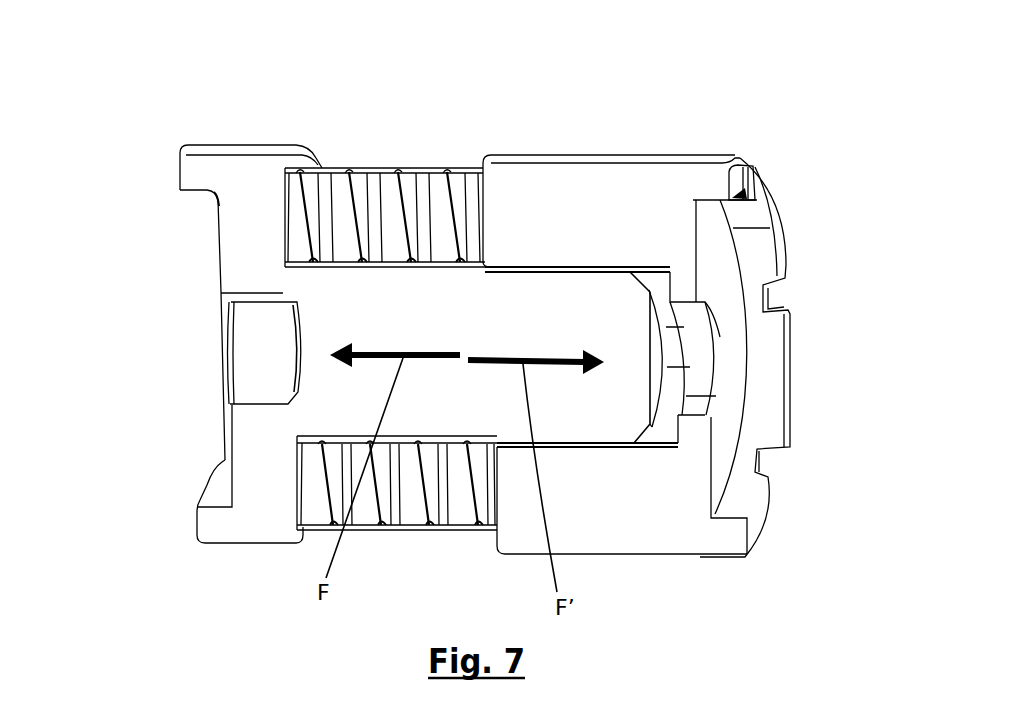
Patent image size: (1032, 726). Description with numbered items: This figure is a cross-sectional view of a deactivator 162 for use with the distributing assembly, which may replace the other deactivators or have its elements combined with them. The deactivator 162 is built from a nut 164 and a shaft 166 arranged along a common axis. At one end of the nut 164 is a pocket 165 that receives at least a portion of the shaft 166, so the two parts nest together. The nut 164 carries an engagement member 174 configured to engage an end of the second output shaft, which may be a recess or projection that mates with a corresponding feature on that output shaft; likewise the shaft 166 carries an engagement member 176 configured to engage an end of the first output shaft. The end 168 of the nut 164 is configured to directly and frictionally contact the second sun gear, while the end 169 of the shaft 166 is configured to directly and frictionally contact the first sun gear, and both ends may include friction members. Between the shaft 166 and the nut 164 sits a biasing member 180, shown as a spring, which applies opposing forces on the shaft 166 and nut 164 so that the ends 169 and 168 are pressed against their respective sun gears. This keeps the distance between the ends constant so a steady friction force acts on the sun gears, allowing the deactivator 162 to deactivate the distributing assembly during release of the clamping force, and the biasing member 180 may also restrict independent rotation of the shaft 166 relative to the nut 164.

The deactivator 162 is at (150, 95).
The nut 164 is at (662, 168).
The pocket 165 is at (668, 421).
The shaft 166 is at (258, 178).
The end of the nut 168 is at (560, 323).
The end of the shaft 169 is at (195, 520).
The engagement member 174 is at (706, 360).
The engagement member 176 is at (263, 350).
The biasing member 180 is at (428, 182).